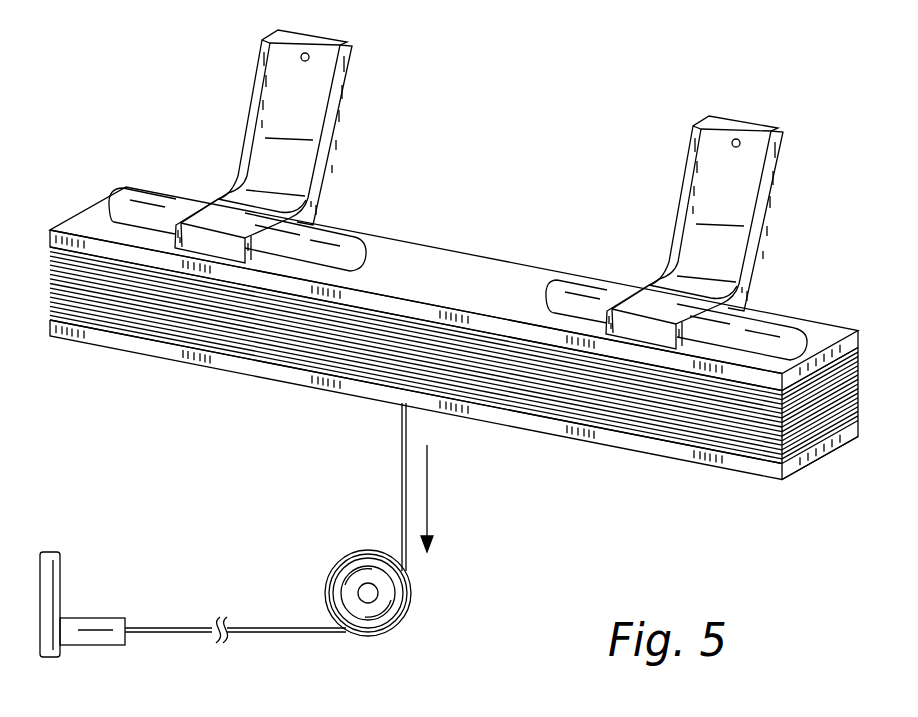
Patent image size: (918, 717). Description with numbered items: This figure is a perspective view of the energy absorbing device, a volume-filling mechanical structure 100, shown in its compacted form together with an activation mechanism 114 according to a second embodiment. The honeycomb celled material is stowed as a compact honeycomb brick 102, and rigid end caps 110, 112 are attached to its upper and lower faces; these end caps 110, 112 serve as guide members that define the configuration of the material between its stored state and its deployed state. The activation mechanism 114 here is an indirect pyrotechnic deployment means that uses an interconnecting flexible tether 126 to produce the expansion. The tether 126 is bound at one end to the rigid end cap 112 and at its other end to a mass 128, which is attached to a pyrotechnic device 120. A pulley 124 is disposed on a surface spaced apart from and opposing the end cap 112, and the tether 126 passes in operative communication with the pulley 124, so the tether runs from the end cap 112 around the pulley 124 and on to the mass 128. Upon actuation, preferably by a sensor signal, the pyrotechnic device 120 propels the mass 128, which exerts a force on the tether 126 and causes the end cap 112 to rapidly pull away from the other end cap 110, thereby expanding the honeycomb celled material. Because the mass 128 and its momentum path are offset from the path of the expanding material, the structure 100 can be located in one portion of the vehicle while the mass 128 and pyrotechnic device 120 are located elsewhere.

The volume-filling mechanical structure 100 is at (454, 259).
The honeycomb brick 102 is at (624, 401).
The end cap 110 is at (817, 334).
The end cap 112 is at (300, 385).
The activation mechanism 114 is at (281, 530).
The pyrotechnic device 120 is at (97, 619).
The pulley 124 is at (397, 621).
The flexible tether 126 is at (401, 480).
The mass 128 is at (60, 578).